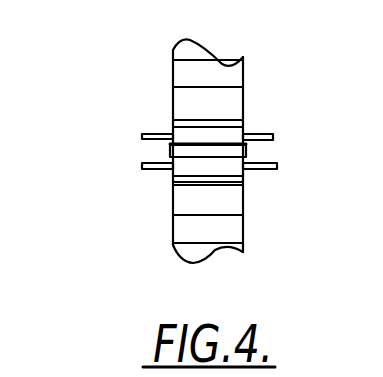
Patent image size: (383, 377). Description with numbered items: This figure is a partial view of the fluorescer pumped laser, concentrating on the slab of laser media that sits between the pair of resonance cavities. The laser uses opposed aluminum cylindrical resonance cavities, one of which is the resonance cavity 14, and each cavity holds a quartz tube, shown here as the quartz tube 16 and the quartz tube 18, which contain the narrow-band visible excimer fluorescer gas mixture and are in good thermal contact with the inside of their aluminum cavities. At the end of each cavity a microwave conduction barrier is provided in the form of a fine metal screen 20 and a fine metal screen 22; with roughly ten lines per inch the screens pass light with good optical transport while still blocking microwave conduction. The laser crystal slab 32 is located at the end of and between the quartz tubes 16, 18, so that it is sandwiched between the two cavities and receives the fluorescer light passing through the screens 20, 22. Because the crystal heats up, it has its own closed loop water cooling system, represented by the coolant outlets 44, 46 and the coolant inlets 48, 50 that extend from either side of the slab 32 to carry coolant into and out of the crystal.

The resonance cavity 14 is at (172, 99).
The quartz tube 16 is at (244, 207).
The quartz tube 18 is at (172, 70).
The fine metal screen 20 is at (172, 184).
The fine metal screen 22 is at (248, 124).
The laser crystal slab 32 is at (172, 144).
The coolant outlet 44 is at (277, 170).
The coolant outlet 46 is at (273, 140).
The coolant inlet 48 is at (142, 135).
The coolant inlet 50 is at (143, 169).